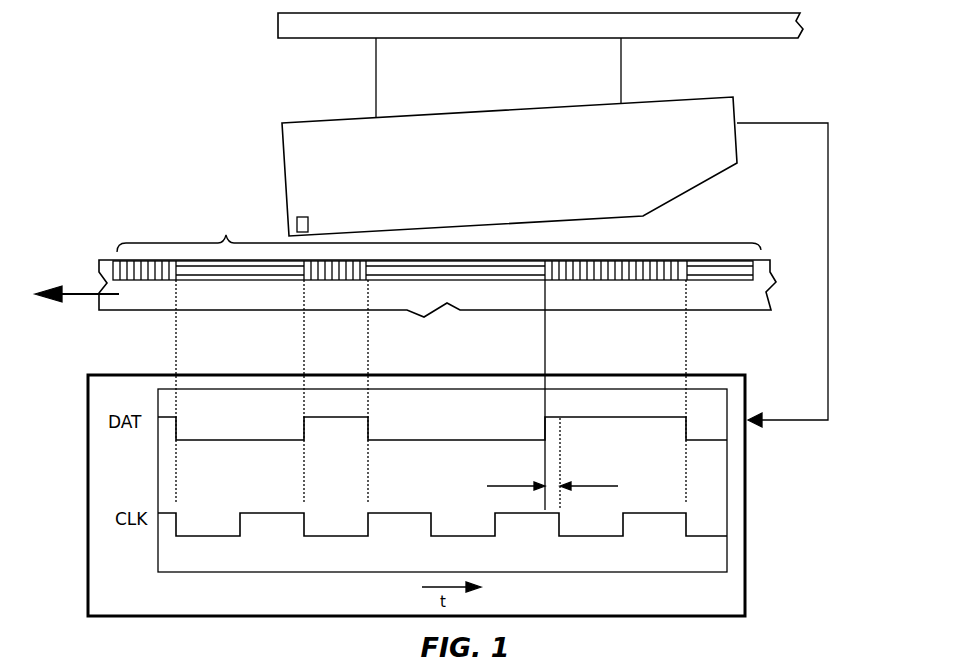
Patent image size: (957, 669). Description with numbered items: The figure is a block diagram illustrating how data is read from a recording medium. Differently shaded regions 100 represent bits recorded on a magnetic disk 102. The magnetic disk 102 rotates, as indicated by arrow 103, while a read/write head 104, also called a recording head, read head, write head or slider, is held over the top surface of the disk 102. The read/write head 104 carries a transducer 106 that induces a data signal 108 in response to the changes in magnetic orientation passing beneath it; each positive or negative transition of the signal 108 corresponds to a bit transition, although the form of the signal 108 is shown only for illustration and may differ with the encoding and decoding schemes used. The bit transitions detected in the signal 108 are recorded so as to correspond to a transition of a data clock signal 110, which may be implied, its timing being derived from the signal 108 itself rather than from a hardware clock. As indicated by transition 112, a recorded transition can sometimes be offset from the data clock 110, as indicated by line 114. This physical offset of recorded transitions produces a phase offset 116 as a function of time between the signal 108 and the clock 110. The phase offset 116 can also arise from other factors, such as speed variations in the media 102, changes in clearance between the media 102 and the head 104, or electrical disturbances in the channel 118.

The differently shaded regions 100 is at (437, 243).
The magnetic disk 102 is at (98, 267).
The arrow 103 is at (71, 298).
The read/write head 104 is at (282, 143).
The transducer 106 is at (302, 215).
The data signal 108 is at (240, 438).
The data clock signal 110 is at (252, 511).
The transition 112 is at (546, 354).
The line 114 is at (561, 455).
The phase offset 116 is at (534, 485).
The channel 118 is at (827, 348).